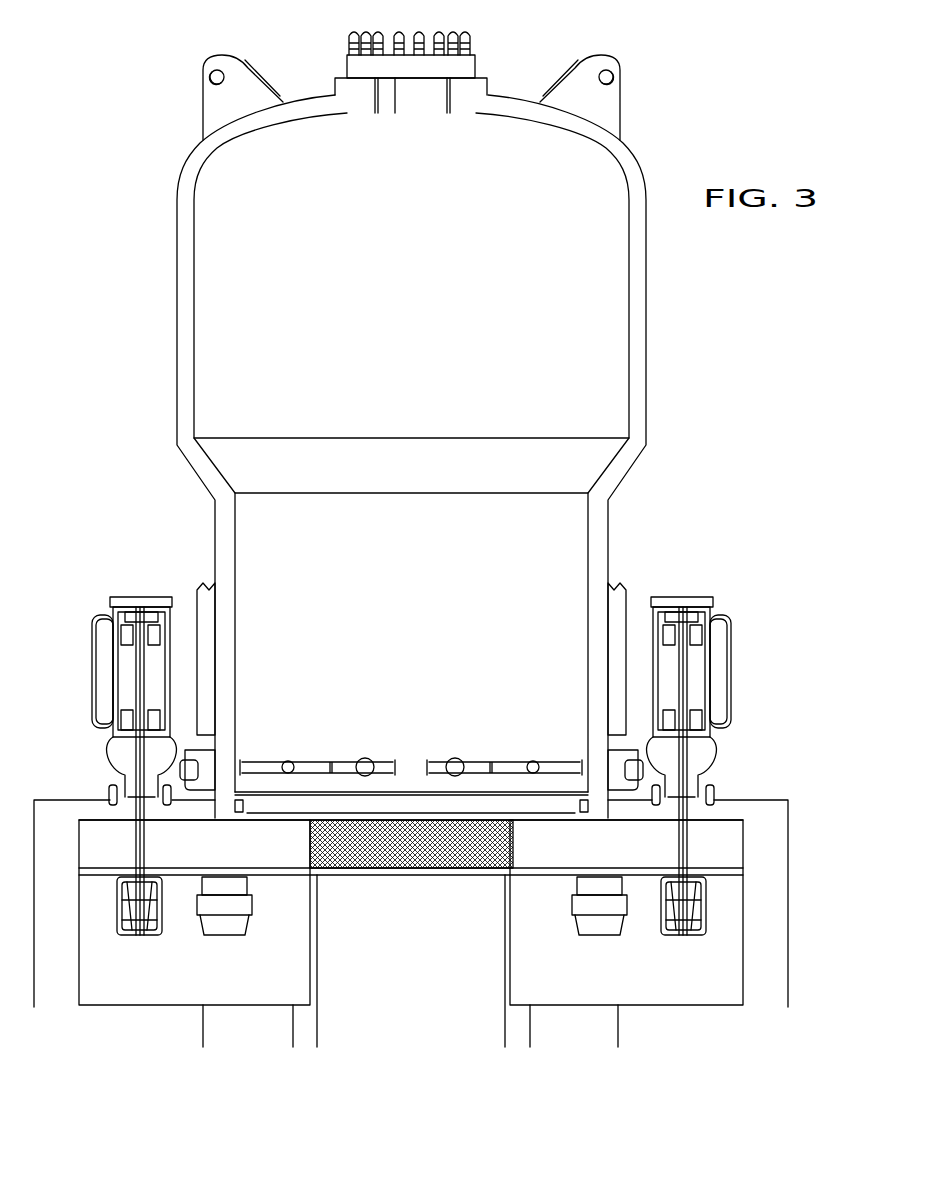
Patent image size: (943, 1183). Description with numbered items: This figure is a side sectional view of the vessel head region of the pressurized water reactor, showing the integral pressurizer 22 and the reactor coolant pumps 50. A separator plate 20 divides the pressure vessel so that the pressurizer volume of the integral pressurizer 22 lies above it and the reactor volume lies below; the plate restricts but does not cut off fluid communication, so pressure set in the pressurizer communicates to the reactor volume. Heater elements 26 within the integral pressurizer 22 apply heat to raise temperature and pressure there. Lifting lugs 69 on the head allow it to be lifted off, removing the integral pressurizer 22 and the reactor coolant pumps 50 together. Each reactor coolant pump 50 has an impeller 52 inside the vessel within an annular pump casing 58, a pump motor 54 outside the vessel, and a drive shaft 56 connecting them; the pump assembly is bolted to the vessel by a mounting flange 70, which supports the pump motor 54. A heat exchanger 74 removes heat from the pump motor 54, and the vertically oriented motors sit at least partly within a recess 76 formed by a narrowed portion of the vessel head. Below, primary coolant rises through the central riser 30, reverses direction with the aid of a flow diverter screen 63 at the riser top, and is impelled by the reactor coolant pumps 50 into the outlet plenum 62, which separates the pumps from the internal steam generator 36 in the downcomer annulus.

The separator plate 20 is at (410, 787).
The integral pressurizer 22 is at (262, 279).
The heater elements 26 is at (268, 765).
The central riser 30 is at (396, 1008).
The internal steam generator 36 is at (252, 1027).
The reactor coolant pump 50 is at (100, 586).
The impeller 52 is at (115, 912).
The pump motor 54 is at (167, 645).
The drive shaft 56 is at (686, 855).
The pump casing 58 is at (595, 937).
The outlet plenum 62 is at (145, 988).
The flow diverter screen 63 is at (438, 848).
The lifting lugs 69 is at (210, 82).
The mounting flange 70 is at (715, 793).
The heat exchanger 74 is at (92, 675).
The recess 76 is at (637, 595).